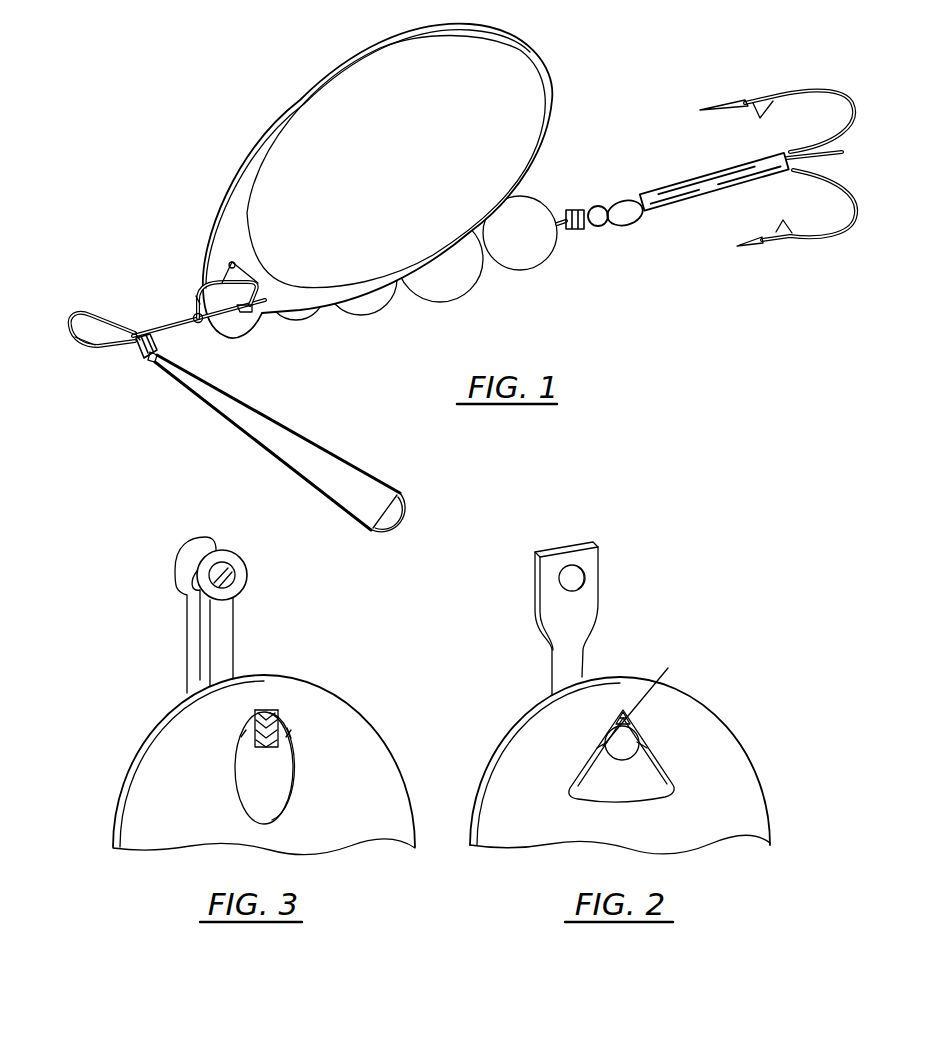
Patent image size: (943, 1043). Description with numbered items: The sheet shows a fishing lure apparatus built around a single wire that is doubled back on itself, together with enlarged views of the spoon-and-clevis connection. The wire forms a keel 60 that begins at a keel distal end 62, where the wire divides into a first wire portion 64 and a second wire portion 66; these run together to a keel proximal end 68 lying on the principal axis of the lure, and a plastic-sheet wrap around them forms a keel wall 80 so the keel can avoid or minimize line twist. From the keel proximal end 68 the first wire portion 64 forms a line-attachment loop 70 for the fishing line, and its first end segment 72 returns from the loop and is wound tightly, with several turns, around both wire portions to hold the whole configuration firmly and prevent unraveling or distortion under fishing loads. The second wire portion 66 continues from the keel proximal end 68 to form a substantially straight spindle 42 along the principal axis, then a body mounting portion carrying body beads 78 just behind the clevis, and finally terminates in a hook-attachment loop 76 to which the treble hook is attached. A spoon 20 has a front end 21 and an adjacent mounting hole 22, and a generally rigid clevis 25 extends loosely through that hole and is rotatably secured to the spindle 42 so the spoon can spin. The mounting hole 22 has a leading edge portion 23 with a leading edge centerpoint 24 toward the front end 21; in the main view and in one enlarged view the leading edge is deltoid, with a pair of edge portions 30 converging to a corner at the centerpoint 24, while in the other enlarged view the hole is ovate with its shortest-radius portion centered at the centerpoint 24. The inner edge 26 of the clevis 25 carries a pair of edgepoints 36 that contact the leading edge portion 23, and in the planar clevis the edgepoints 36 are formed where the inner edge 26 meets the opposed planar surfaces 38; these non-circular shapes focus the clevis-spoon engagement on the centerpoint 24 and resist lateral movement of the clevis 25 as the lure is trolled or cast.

In FIG. 1, the spoon 20 is at (502, 53).
In FIG. 1, the front end 21 is at (203, 281).
In FIG. 2, the front end 21 is at (623, 677).
In FIG. 3, the front end 21 is at (268, 677).
In FIG. 2, the mounting hole 22 is at (637, 783).
In FIG. 3, the mounting hole 22 is at (280, 780).
In FIG. 1, the leading edge portion 23 is at (229, 262).
In FIG. 2, the leading edge portion 23 is at (630, 718).
In FIG. 3, the leading edge portion 23 is at (291, 734).
In FIG. 1, the leading edge centerpoint 24 is at (225, 292).
In FIG. 2, the leading edge centerpoint 24 is at (650, 697).
In FIG. 3, the leading edge centerpoint 24 is at (268, 712).
In FIG. 1, the clevis 25 is at (197, 297).
In FIG. 2, the inner edge 26 is at (615, 724).
In FIG. 3, the inner edge 26 is at (258, 709).
In FIG. 1, the edge portions 30 is at (237, 257).
In FIG. 2, the edge portions 30 is at (578, 772).
In FIG. 2, the edgepoints 36 is at (609, 727).
In FIG. 3, the edgepoints 36 is at (254, 712).
In FIG. 3, the planar surfaces 38 is at (246, 733).
In FIG. 1, the spindle 42 is at (187, 324).
In FIG. 1, the keel 60 is at (343, 458).
In FIG. 1, the keel distal end 62 is at (410, 522).
In FIG. 1, the first wire portion 64 is at (90, 354).
In FIG. 1, the second wire portion 66 is at (147, 328).
In FIG. 1, the keel proximal end 68 is at (152, 363).
In FIG. 1, the line-attachment loop 70 is at (72, 344).
In FIG. 1, the first end segment 72 is at (140, 354).
In FIG. 1, the hook-attachment loop 76 is at (605, 229).
In FIG. 1, the body beads 78 is at (380, 303).
In FIG. 1, the keel wall 80 is at (297, 441).